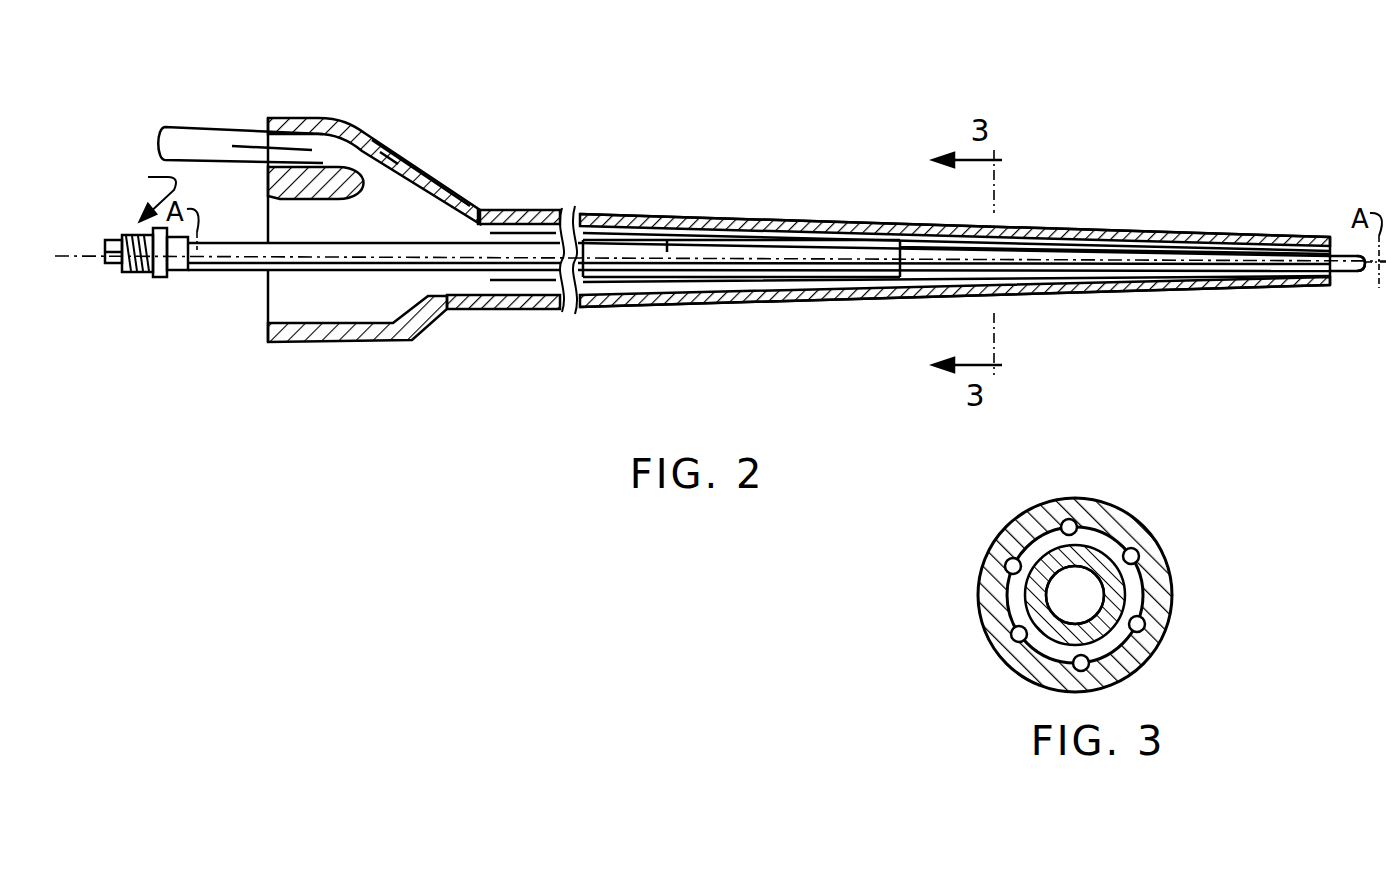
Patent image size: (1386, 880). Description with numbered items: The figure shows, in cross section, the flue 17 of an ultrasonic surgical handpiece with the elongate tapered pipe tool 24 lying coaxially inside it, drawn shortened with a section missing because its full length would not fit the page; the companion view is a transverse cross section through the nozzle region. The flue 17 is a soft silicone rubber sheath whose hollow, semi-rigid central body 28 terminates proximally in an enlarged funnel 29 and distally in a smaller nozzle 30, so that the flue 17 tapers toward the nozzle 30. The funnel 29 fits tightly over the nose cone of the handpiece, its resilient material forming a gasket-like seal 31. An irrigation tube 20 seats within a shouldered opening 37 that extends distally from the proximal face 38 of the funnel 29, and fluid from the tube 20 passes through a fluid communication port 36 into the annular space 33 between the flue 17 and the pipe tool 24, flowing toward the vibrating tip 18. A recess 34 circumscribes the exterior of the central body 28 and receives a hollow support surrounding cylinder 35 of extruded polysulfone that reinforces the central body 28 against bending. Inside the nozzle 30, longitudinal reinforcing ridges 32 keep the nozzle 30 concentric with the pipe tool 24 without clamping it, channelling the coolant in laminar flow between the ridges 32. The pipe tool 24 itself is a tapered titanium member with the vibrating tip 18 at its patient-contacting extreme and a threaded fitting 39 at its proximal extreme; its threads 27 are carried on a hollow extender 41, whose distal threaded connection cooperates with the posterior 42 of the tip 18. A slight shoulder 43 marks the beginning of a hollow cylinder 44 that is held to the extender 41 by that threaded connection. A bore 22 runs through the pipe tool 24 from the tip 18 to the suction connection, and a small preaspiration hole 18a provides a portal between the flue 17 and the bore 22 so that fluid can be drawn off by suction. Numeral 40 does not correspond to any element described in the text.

In FIG. 2, the flue 17 is at (502, 233).
In FIG. 2, the vibrating tip 18 is at (1358, 272).
In FIG. 2, the preaspiration hole 18a is at (1337, 256).
In FIG. 2, the tube 20 is at (182, 128).
In FIG. 2, the bore 22 is at (93, 262).
In FIG. 3, the bore 22 is at (1092, 583).
In FIG. 2, the elongate tapered pipe tool 24 is at (258, 257).
In FIG. 3, the elongate tapered pipe tool 24 is at (1045, 623).
In FIG. 2, the threads 27 is at (137, 278).
In FIG. 2, the central body 28 is at (672, 308).
In FIG. 2, the funnel 29 is at (392, 148).
In FIG. 2, the nozzle 30 is at (1283, 238).
In FIG. 2, the seal 31 is at (280, 202).
In FIG. 2, the reinforcing ridges 32 is at (1072, 232).
In FIG. 3, the reinforcing ridges 32 is at (1073, 530).
In FIG. 2, the annular space 33 is at (432, 216).
In FIG. 3, the annular space 33 is at (1028, 510).
In FIG. 2, the recess 34 is at (663, 212).
In FIG. 2, the hollow support surrounding cylinder 35 is at (618, 213).
In FIG. 2, the fluid communication port 36 is at (385, 183).
In FIG. 2, the shouldered opening 37 is at (300, 118).
In FIG. 2, the proximal face 38 is at (346, 134).
In FIG. 2, the threaded fitting 39 is at (142, 192).
In FIG. 2, the lower hub wall 40 is at (268, 340).
In FIG. 2, the extender 41 is at (388, 254).
In FIG. 2, the posterior 42 is at (741, 282).
In FIG. 2, the shoulder 43 is at (905, 244).
In FIG. 2, the hollow cylinder 44 is at (772, 257).